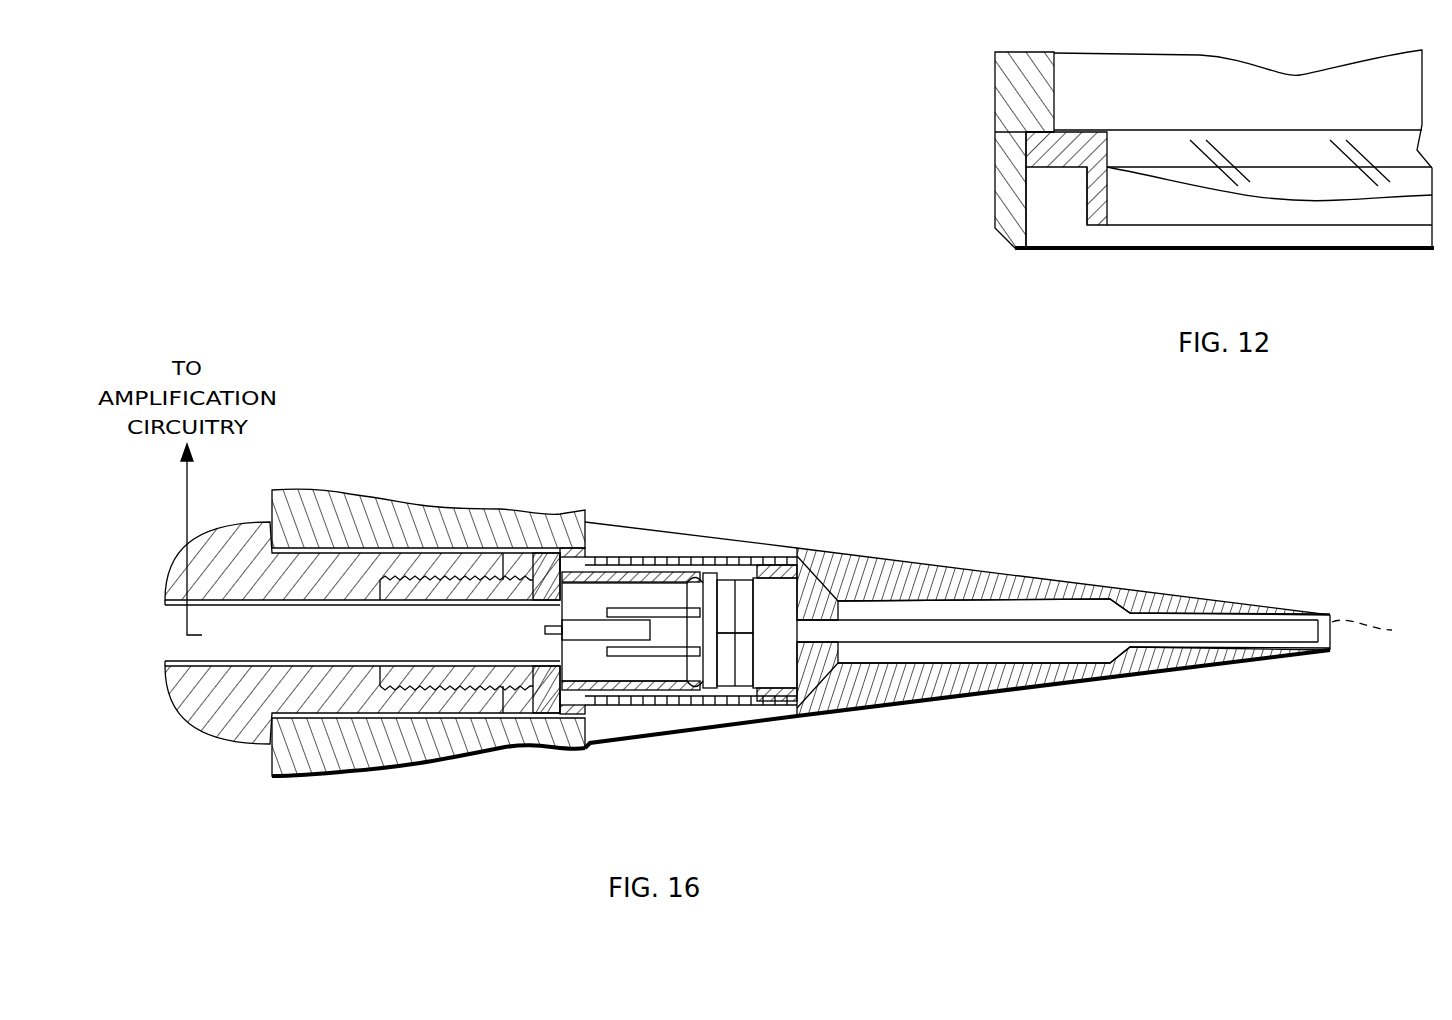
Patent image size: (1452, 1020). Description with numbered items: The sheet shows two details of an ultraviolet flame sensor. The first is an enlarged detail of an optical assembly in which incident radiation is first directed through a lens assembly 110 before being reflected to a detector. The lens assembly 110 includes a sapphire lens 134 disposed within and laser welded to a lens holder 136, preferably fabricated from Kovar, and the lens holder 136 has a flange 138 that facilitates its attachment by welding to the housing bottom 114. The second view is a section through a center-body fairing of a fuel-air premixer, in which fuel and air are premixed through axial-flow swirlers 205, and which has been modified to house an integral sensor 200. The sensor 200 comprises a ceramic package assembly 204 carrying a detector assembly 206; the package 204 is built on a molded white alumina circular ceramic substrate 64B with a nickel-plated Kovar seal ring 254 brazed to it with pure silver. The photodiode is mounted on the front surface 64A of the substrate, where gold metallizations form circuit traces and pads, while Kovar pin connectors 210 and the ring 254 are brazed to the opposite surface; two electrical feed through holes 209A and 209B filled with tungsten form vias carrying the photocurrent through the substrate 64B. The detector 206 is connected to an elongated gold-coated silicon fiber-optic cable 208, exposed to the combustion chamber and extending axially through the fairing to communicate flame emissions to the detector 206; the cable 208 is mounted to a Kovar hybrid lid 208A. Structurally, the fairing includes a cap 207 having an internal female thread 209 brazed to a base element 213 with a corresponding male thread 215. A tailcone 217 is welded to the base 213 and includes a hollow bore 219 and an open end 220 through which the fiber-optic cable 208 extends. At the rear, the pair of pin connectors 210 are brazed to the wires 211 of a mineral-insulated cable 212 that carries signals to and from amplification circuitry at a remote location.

In FIG. 12, the lens assembly 110 is at (1208, 198).
In FIG. 12, the housing bottom 114 is at (995, 195).
In FIG. 12, the sapphire lens 134 is at (1322, 193).
In FIG. 12, the lens holder 136 is at (1085, 213).
In FIG. 12, the flange 138 is at (1048, 150).
In FIG. 16, the sensor 200 is at (860, 722).
In FIG. 16, the ceramic package assembly 204 is at (778, 578).
In FIG. 16, the axial-flow swirlers 205 is at (470, 512).
In FIG. 16, the detector assembly 206 is at (730, 700).
In FIG. 16, the cap 207 is at (215, 726).
In FIG. 16, the fiber-optic cable 208 is at (983, 630).
In FIG. 16, the hybrid lid 208A is at (838, 705).
In FIG. 16, the internal female thread 209 is at (313, 780).
In FIG. 16, the electrical feed through hole 209A is at (692, 575).
In FIG. 16, the electrical feed through hole 209B is at (688, 692).
In FIG. 16, the pin connectors 210 is at (648, 583).
In FIG. 16, the wires 211 is at (556, 633).
In FIG. 16, the cable 212 is at (216, 545).
In FIG. 16, the base element 213 is at (470, 690).
In FIG. 16, the male thread 215 is at (503, 765).
In FIG. 16, the tailcone 217 is at (1075, 660).
In FIG. 16, the hollow bore 219 is at (1075, 603).
In FIG. 16, the open end 220 is at (1385, 629).
In FIG. 16, the seal ring 254 is at (816, 650).
In FIG. 16, the surface of ceramic substrate 64A is at (727, 603).
In FIG. 16, the ceramic substrate 64B is at (655, 655).